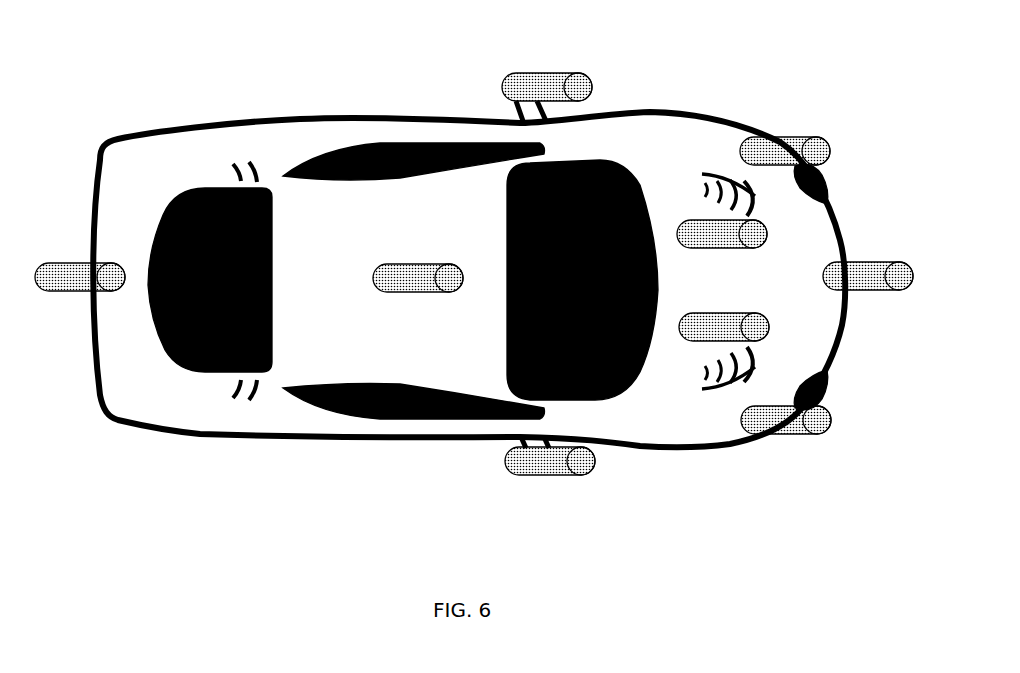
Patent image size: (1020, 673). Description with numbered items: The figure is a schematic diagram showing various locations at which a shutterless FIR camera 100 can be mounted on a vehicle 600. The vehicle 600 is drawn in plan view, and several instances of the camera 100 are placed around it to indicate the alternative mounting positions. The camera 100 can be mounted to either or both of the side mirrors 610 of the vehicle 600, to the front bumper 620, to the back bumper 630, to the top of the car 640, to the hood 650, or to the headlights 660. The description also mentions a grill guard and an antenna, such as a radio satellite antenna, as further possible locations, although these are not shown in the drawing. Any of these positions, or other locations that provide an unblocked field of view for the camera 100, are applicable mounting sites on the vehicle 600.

The shutterless FIR camera 100 is at (476, 286).
The vehicle 600 is at (162, 436).
The side mirrors 610 is at (523, 96).
The front bumper 620 is at (844, 285).
The back bumper 630 is at (56, 286).
The top of the car 640 is at (350, 242).
The hood 650 is at (700, 336).
The headlights 660 is at (761, 160).